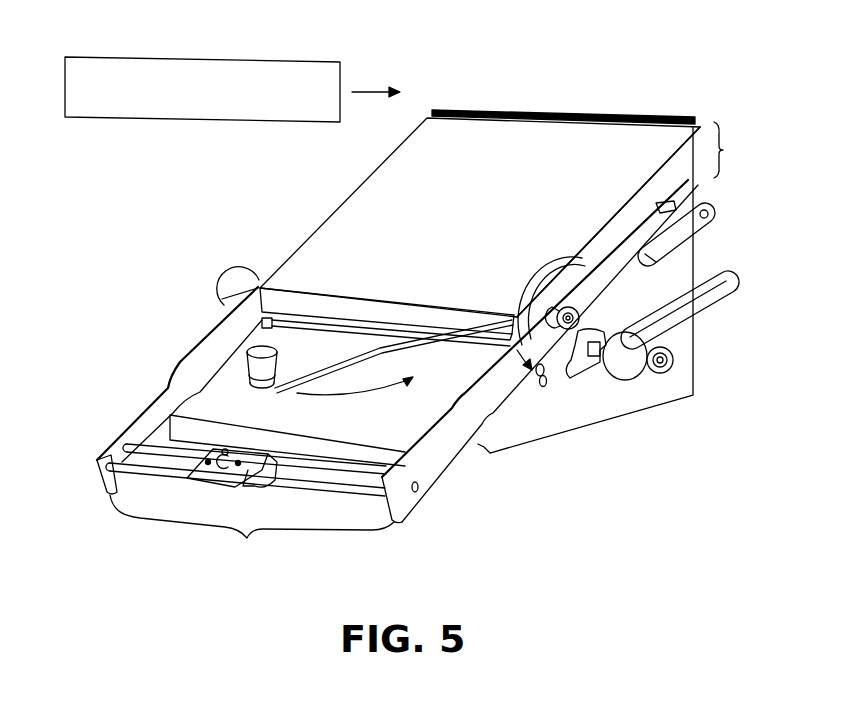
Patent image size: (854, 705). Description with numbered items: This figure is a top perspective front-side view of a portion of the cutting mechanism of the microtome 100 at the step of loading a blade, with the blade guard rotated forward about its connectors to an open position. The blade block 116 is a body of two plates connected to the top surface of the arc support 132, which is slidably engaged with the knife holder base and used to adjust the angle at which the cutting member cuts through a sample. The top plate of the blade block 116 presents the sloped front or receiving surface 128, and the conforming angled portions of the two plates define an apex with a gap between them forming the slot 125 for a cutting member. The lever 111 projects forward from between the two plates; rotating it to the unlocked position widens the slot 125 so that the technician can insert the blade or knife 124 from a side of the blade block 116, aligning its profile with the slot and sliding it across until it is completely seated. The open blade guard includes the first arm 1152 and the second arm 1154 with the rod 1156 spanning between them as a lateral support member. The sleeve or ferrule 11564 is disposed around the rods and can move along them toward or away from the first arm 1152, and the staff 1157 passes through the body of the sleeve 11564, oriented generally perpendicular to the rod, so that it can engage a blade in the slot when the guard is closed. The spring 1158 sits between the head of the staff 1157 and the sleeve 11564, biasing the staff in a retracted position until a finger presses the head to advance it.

The microtome 100 is at (716, 74).
The blade or knife 124 is at (222, 56).
The slot 125 is at (599, 119).
The blade block 116 is at (735, 150).
The sloped front or receiving surface 128 is at (343, 230).
The lever 111 is at (317, 352).
The staff 1157 is at (224, 449).
The first arm 1152 is at (207, 450).
The spring 1158 is at (152, 440).
The sleeve or ferrule 11564 is at (247, 453).
The arc support 132 is at (684, 360).
The second arm 1154 is at (423, 478).
The rod 1156 is at (247, 538).